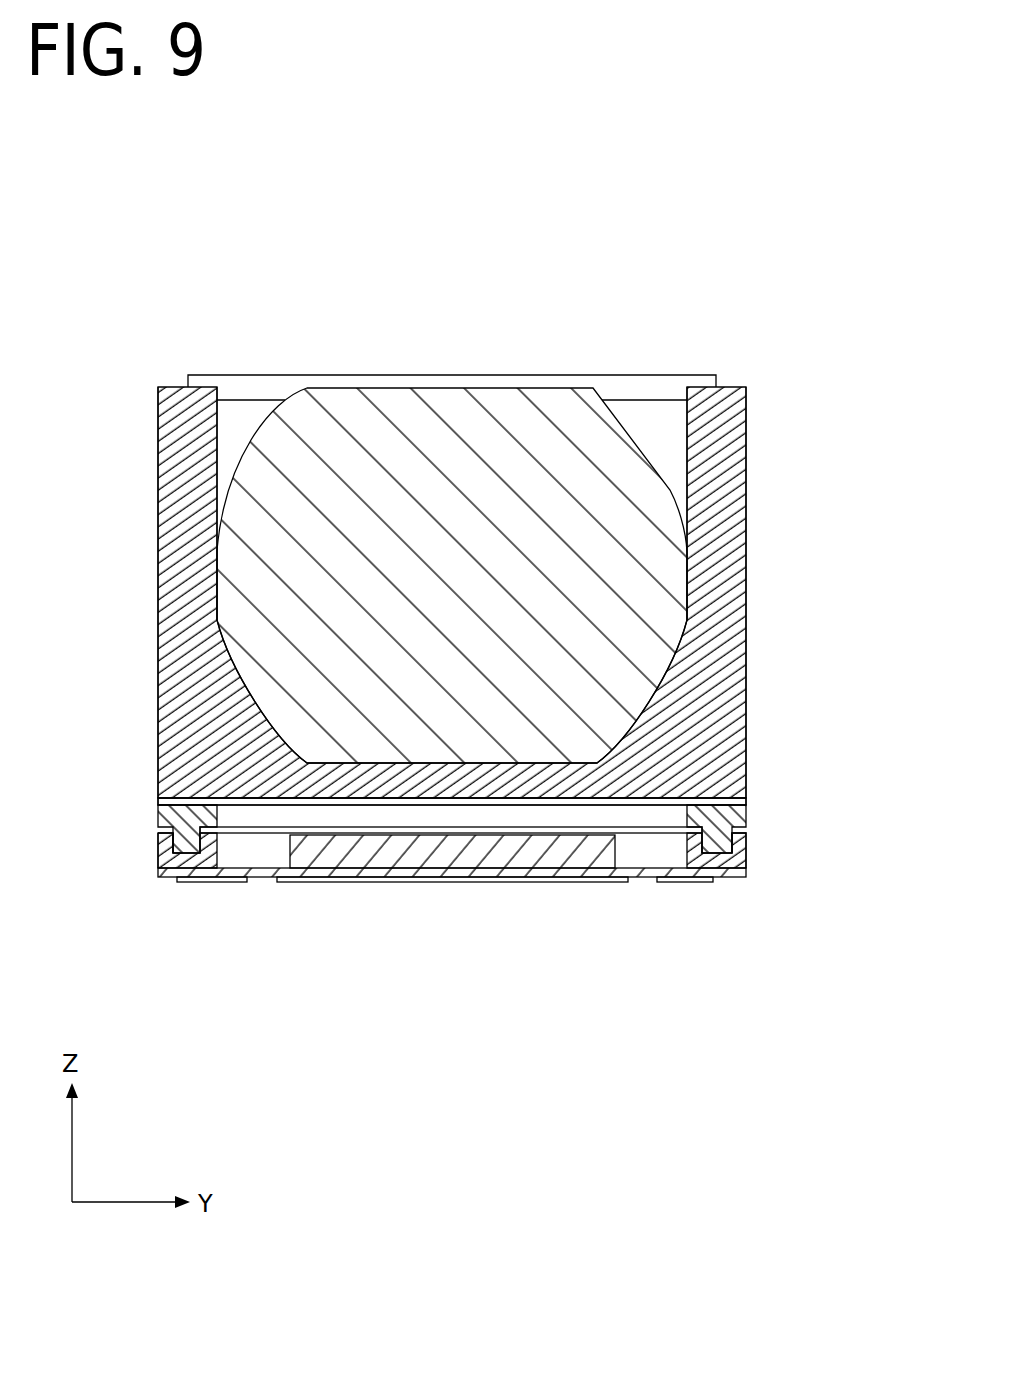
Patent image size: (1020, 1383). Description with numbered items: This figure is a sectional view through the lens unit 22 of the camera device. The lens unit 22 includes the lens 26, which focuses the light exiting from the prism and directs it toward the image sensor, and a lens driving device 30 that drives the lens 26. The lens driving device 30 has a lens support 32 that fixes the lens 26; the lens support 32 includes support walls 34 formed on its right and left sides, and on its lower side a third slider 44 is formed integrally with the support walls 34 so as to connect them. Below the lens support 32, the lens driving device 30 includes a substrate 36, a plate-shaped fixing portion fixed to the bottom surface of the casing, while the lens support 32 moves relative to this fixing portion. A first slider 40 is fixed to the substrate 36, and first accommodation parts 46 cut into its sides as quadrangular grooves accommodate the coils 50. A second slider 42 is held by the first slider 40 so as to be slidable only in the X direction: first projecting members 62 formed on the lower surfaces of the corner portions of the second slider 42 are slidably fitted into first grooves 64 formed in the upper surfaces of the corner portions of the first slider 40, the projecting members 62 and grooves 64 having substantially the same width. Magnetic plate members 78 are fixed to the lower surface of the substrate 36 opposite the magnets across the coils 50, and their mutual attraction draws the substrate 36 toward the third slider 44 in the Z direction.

The lens unit 22 is at (633, 300).
The lens 26 is at (462, 425).
The lens support 32 is at (756, 497).
The support walls 34 is at (190, 535).
The lens driving device 30 is at (755, 817).
The third slider 44 is at (183, 797).
The second slider 42 is at (165, 812).
The first slider 40 is at (160, 845).
The first projecting members 62 is at (188, 868).
The first grooves 64 is at (178, 863).
The coils 50 is at (420, 885).
The substrate 36 is at (262, 878).
The first accommodation parts 46 is at (640, 878).
The magnetic plate members 78 is at (215, 885).